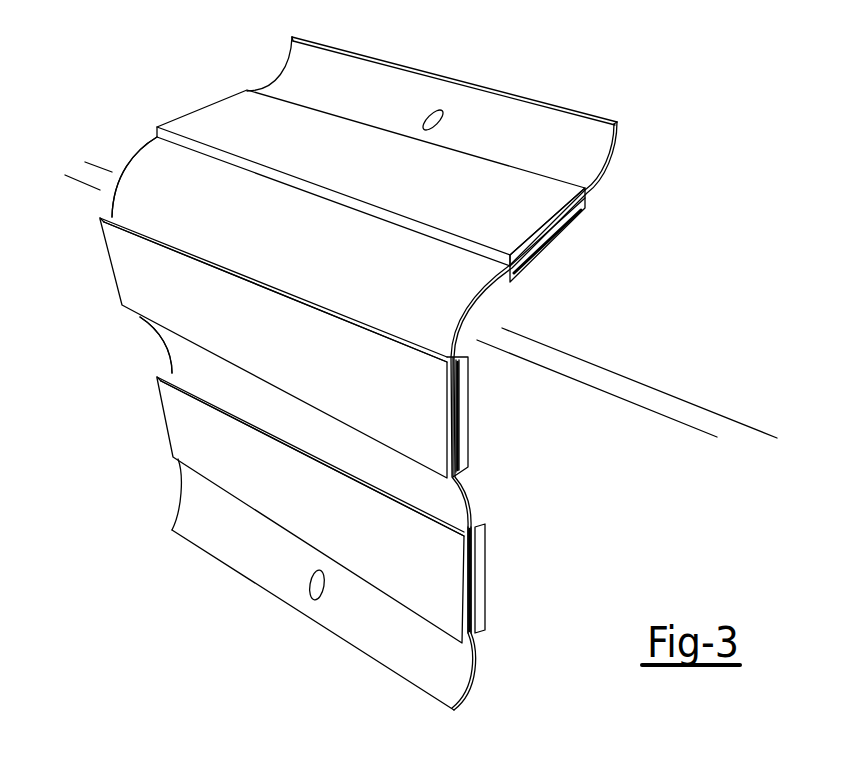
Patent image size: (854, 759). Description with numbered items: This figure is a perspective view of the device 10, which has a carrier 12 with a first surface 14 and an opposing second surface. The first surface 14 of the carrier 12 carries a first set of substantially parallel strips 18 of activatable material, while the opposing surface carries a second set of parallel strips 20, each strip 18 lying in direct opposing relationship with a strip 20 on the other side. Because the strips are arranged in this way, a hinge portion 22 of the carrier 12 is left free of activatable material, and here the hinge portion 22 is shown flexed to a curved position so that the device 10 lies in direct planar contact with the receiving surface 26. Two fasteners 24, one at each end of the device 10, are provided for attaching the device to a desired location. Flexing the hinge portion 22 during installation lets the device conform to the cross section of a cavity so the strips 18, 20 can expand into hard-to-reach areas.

The device 10 is at (163, 76).
The carrier 12 is at (605, 173).
The first surface 14 is at (211, 226).
The first set of substantially parallel strips 18 is at (353, 175).
The second set of substantially parallel strips 20 is at (562, 227).
The hinge portion 22 is at (155, 198).
The fastener 24 is at (428, 118).
The mounting surface 26 is at (643, 554).